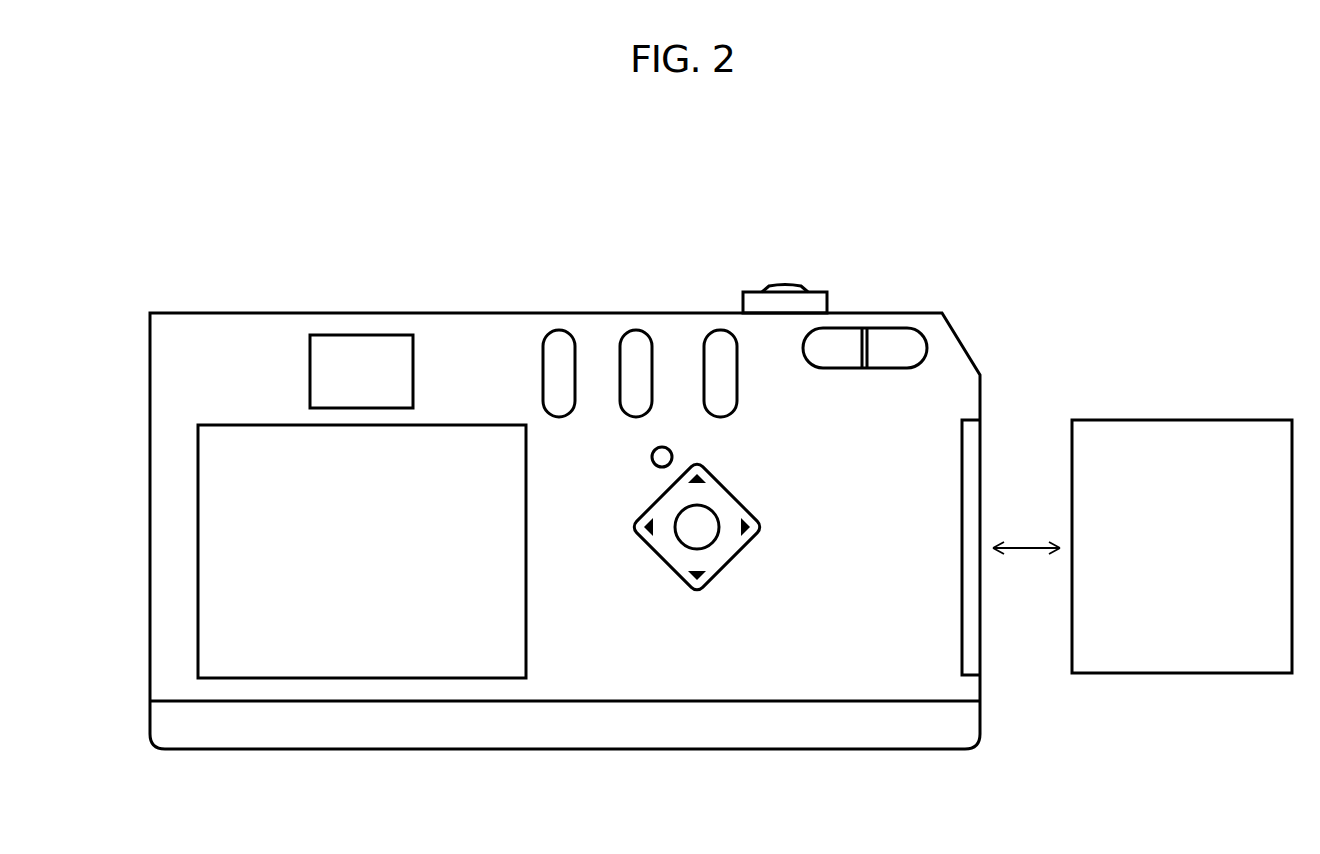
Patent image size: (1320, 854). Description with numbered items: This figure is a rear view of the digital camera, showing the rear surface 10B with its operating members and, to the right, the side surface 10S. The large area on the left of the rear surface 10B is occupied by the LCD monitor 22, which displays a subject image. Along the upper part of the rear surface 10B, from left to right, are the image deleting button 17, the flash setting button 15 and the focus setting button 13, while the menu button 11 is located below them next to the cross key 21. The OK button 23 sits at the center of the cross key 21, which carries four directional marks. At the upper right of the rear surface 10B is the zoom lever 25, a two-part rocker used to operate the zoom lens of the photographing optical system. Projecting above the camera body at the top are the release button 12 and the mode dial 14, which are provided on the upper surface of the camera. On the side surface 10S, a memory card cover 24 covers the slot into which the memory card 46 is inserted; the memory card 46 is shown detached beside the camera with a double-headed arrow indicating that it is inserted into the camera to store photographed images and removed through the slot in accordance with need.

The side surface 10S is at (980, 398).
The rear surface 10B is at (893, 677).
The menu button 11 is at (669, 448).
The release button 12 is at (785, 286).
The focus setting button 13 is at (720, 330).
The mode dial 14 is at (815, 292).
The flash setting button 15 is at (637, 330).
The image deleting button 17 is at (559, 330).
The cross key 21 is at (658, 563).
The LCD monitor 22 is at (362, 680).
The OK button 23 is at (718, 537).
The memory card cover 24 is at (972, 650).
The zoom lever 25 is at (927, 348).
The memory card 46 is at (1178, 630).